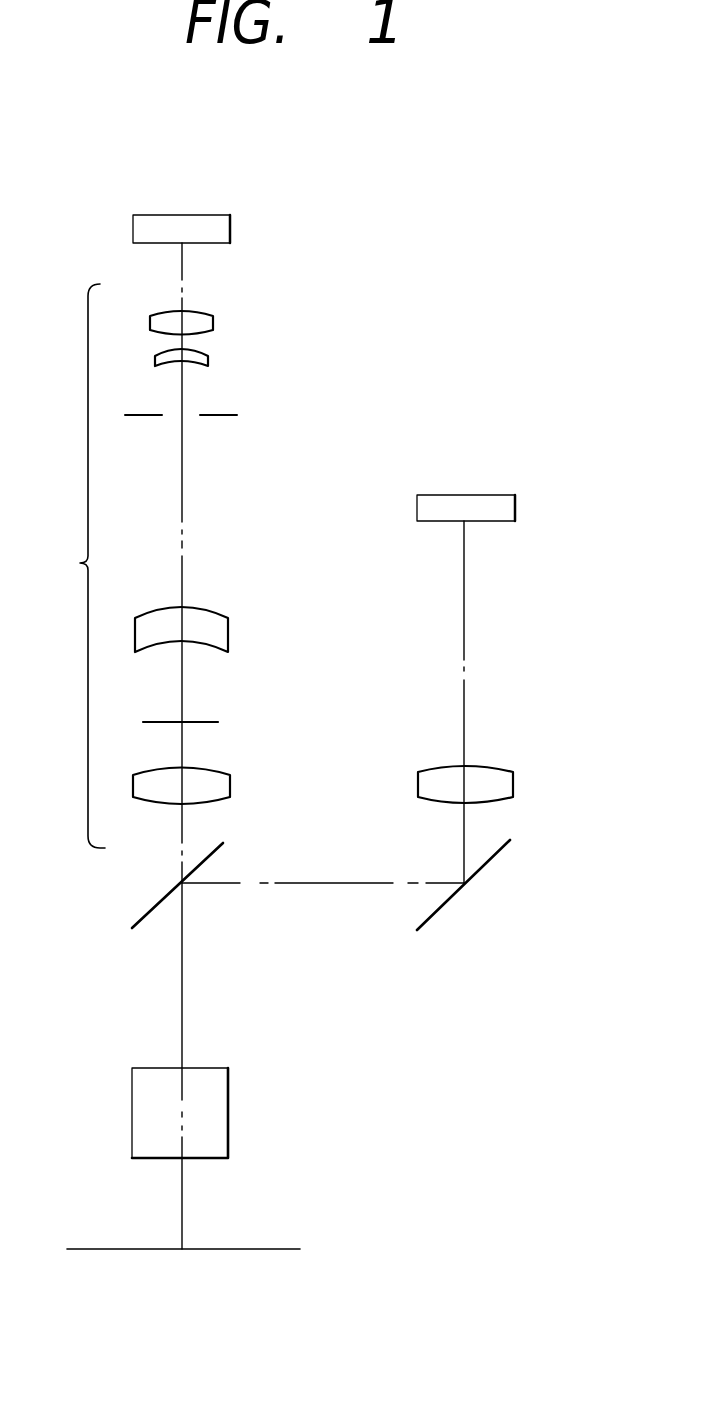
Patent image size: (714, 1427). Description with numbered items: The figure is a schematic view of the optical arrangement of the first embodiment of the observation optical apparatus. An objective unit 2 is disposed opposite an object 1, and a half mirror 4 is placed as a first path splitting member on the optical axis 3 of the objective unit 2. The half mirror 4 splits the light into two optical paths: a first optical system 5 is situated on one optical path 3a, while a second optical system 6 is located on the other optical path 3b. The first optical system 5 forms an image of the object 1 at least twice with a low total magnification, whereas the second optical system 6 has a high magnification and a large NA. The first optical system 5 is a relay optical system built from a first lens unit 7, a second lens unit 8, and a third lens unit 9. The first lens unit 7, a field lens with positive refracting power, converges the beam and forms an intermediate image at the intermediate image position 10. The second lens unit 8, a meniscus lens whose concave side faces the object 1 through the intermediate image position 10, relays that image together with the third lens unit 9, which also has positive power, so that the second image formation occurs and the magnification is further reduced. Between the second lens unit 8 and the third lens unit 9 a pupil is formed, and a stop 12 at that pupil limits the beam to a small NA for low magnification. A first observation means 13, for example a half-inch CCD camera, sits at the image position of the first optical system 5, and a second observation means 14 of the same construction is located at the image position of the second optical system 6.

The object 1 is at (95, 1248).
The objective unit 2 is at (229, 1118).
The optical axis 3 is at (181, 965).
The optical path 3a is at (183, 519).
The optical path 3b is at (313, 885).
The half mirror 4 is at (158, 905).
The first optical system 5 is at (75, 566).
The second optical system 6 is at (525, 725).
The first lens unit 7 is at (231, 785).
The second lens unit 8 is at (209, 609).
The third lens unit 9 is at (232, 298).
The intermediate image position 10 is at (204, 720).
The stop 12 is at (230, 416).
The first observation means 13 is at (205, 213).
The second observation means 14 is at (516, 503).